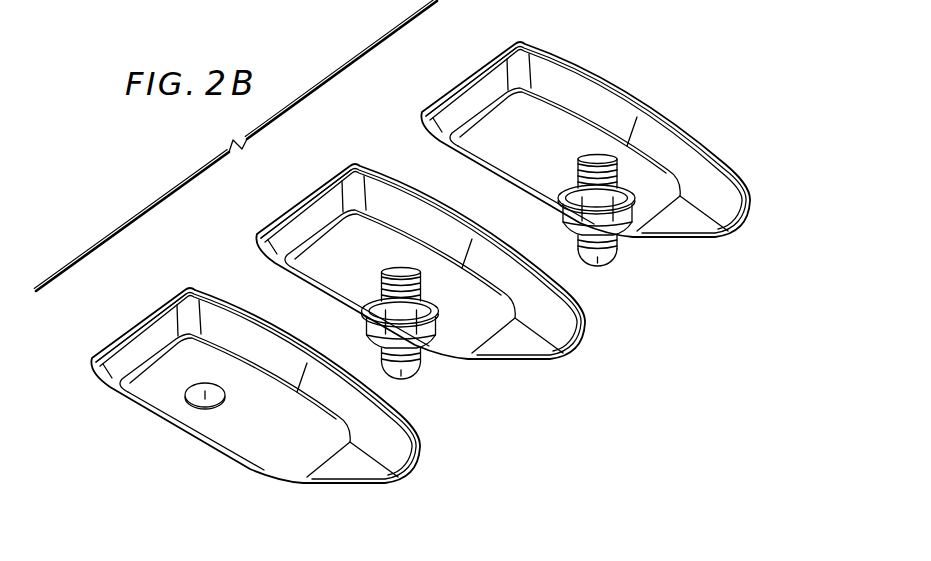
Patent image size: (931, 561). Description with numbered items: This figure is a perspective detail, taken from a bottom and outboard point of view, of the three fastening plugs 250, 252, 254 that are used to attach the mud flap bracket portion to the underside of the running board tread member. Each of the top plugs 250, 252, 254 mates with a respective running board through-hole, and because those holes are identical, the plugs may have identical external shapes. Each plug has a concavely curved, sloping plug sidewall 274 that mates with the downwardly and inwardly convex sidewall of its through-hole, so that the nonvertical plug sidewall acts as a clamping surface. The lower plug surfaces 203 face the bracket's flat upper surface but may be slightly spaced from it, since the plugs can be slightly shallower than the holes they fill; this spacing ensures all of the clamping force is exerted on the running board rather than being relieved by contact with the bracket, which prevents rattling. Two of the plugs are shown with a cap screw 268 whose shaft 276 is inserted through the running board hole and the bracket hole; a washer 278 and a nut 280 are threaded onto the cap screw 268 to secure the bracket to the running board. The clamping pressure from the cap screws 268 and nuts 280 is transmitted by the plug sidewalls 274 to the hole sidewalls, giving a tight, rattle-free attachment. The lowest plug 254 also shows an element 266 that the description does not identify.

The lower plug surface 203 is at (207, 360).
The top plug 250 is at (748, 228).
The top plug 252 is at (570, 347).
The top plug 254 is at (398, 476).
The aperture 266 is at (205, 398).
The cap screw 268 is at (600, 258).
The plug sidewall 274 is at (145, 340).
The shaft 276 is at (573, 176).
The washer 278 is at (560, 220).
The nut 280 is at (630, 233).